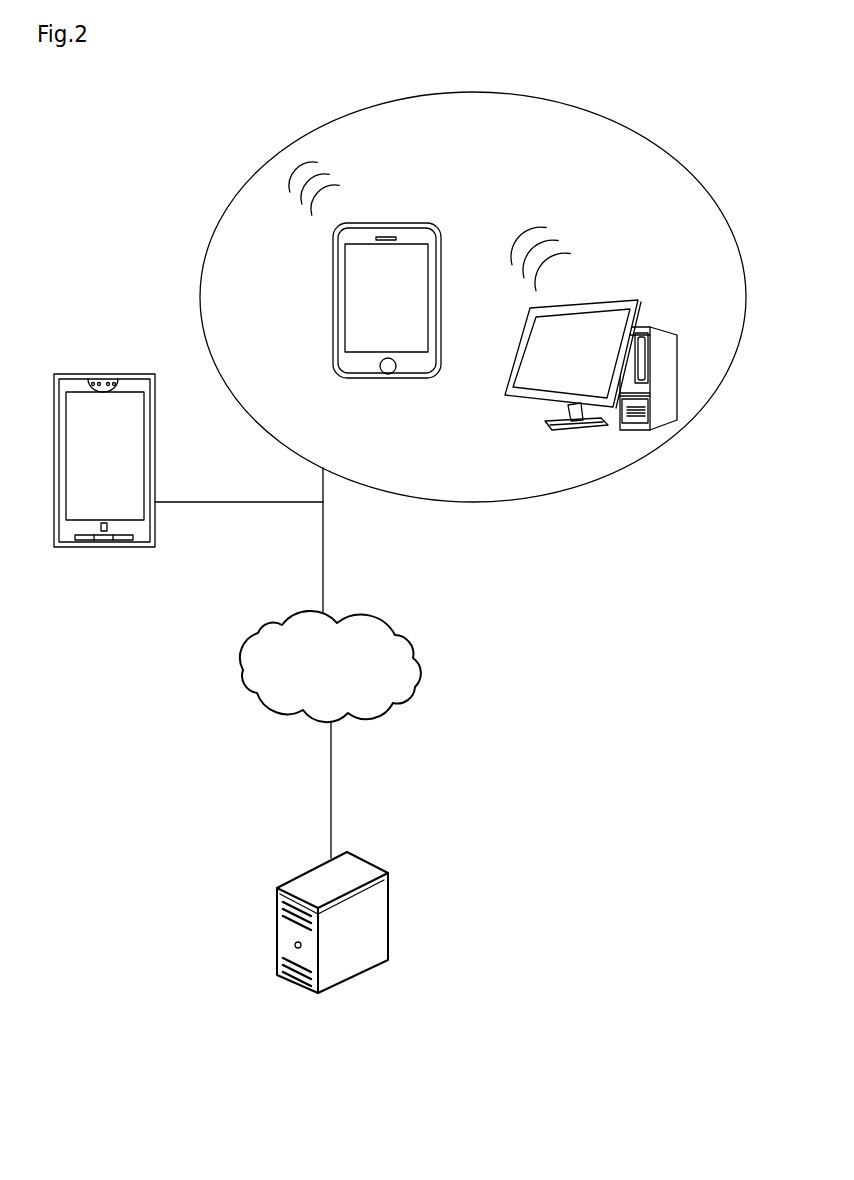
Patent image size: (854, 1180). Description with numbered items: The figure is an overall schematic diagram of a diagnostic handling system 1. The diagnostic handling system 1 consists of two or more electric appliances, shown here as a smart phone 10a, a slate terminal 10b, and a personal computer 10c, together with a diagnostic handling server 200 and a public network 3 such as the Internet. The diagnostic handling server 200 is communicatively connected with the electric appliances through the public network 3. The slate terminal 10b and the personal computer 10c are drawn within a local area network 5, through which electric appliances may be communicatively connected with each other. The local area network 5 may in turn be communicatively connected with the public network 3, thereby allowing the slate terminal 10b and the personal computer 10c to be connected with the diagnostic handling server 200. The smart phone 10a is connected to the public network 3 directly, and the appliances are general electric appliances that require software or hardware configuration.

The diagnostic handling system 1 is at (610, 646).
The public network 3 is at (390, 622).
The local area network 5 is at (567, 490).
The smart phone 10a is at (98, 374).
The slate terminal 10b is at (421, 224).
The personal computer 10c is at (630, 300).
The diagnostic handling server 200 is at (347, 852).